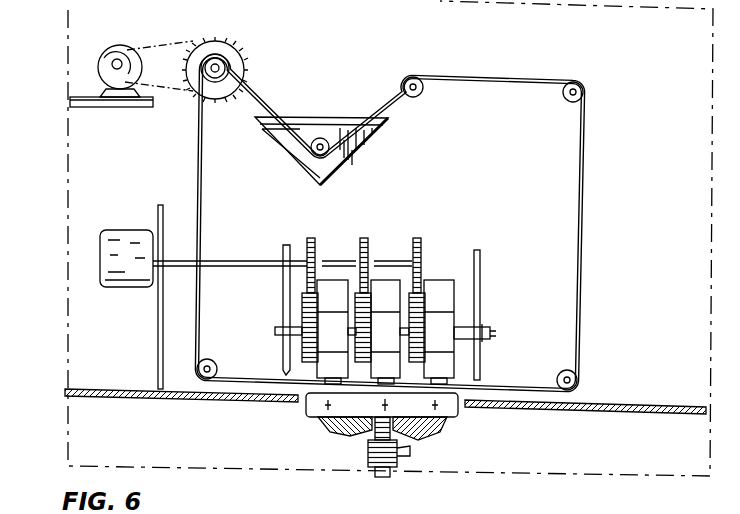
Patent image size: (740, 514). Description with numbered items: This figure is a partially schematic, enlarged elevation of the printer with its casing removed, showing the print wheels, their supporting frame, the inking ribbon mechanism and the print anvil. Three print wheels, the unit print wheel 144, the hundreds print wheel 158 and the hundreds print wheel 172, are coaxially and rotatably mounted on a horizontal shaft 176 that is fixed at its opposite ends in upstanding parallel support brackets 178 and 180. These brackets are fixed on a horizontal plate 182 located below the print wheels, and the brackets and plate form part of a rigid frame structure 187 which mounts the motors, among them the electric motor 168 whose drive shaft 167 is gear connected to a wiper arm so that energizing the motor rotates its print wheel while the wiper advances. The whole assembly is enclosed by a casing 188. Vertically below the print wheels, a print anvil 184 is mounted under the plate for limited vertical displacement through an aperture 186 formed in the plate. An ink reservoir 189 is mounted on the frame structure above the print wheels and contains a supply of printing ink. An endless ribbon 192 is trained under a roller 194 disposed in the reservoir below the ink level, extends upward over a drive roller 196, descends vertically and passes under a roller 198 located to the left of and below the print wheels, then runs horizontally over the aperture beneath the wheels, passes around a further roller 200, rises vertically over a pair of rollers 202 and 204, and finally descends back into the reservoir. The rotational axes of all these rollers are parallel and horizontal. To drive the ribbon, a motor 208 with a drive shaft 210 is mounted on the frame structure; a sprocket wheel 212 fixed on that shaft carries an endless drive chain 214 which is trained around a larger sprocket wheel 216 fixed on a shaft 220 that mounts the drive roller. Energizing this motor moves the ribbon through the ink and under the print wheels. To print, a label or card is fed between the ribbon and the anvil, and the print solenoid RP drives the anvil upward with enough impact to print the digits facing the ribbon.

The unit print wheel 144 is at (452, 378).
The hundreds print wheel 158 is at (386, 285).
The drive shaft 167 is at (224, 261).
The electric motor 168 is at (122, 236).
The hundreds print wheel 172 is at (329, 287).
The horizontal shaft 176 is at (469, 330).
The support bracket 178 is at (283, 289).
The support bracket 180 is at (481, 276).
The horizontal plate 182 is at (573, 406).
The print anvil 184 is at (336, 411).
The aperture 186 is at (303, 404).
The frame structure 187 is at (151, 372).
The casing 188 is at (60, 434).
The ink reservoir 189 is at (380, 123).
The endless ribbon 192 is at (512, 82).
The roller 194 is at (324, 139).
The drive roller 196 is at (214, 84).
The roller 198 is at (216, 368).
The roller 200 is at (558, 378).
The roller 202 is at (571, 101).
The roller 204 is at (422, 93).
The motor 208 is at (165, 30).
The drive shaft 210 is at (110, 68).
The sprocket wheel 212 is at (142, 56).
The endless drive chain 214 is at (222, 42).
The sprocket wheel 216 is at (188, 74).
The shaft 220 is at (226, 68).
The print solenoid RP is at (368, 457).